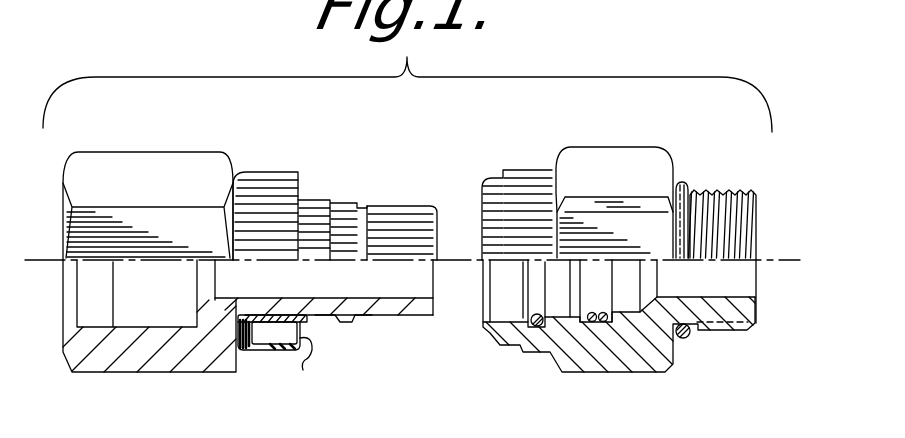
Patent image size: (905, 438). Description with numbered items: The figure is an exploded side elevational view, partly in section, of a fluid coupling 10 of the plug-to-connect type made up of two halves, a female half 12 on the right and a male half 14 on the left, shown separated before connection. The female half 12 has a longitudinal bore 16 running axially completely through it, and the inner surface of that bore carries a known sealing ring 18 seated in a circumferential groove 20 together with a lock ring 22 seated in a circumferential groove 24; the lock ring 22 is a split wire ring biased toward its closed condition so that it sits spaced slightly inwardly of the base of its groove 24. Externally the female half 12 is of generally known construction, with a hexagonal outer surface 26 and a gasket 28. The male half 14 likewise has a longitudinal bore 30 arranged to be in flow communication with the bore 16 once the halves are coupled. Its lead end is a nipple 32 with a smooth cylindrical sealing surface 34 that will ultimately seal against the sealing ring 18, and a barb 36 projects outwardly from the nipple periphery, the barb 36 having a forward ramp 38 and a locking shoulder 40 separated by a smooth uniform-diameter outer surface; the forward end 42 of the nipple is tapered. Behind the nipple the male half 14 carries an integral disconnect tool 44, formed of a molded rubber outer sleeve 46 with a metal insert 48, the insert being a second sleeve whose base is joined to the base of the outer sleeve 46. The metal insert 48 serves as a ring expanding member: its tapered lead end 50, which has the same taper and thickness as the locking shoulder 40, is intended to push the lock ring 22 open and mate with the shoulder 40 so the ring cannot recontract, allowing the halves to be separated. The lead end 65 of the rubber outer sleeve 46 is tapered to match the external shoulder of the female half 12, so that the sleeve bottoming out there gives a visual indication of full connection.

The fluid coupling 10 is at (692, 166).
The female half 12 is at (667, 372).
The male half 14 is at (159, 372).
The longitudinal bore 16 is at (738, 298).
The sealing ring 18 is at (605, 322).
The circumferential groove 20 is at (591, 322).
The lock ring 22 is at (536, 313).
The circumferential groove 24 is at (535, 327).
The hexagonal outer surface 26 is at (612, 160).
The gasket 28 is at (690, 337).
The longitudinal bore 30 is at (402, 312).
The nipple 32 is at (388, 232).
The sealing surface 34 is at (402, 210).
The barb 36 is at (350, 322).
The forward ramp 38 is at (363, 317).
The locking shoulder 40 is at (324, 316).
The forward end 42 is at (430, 315).
The disconnect tool 44 is at (275, 172).
The outer sleeve 46 is at (265, 350).
The metal insert 48 is at (268, 315).
The lead end 50 is at (311, 315).
The lead end 65 is at (291, 367).